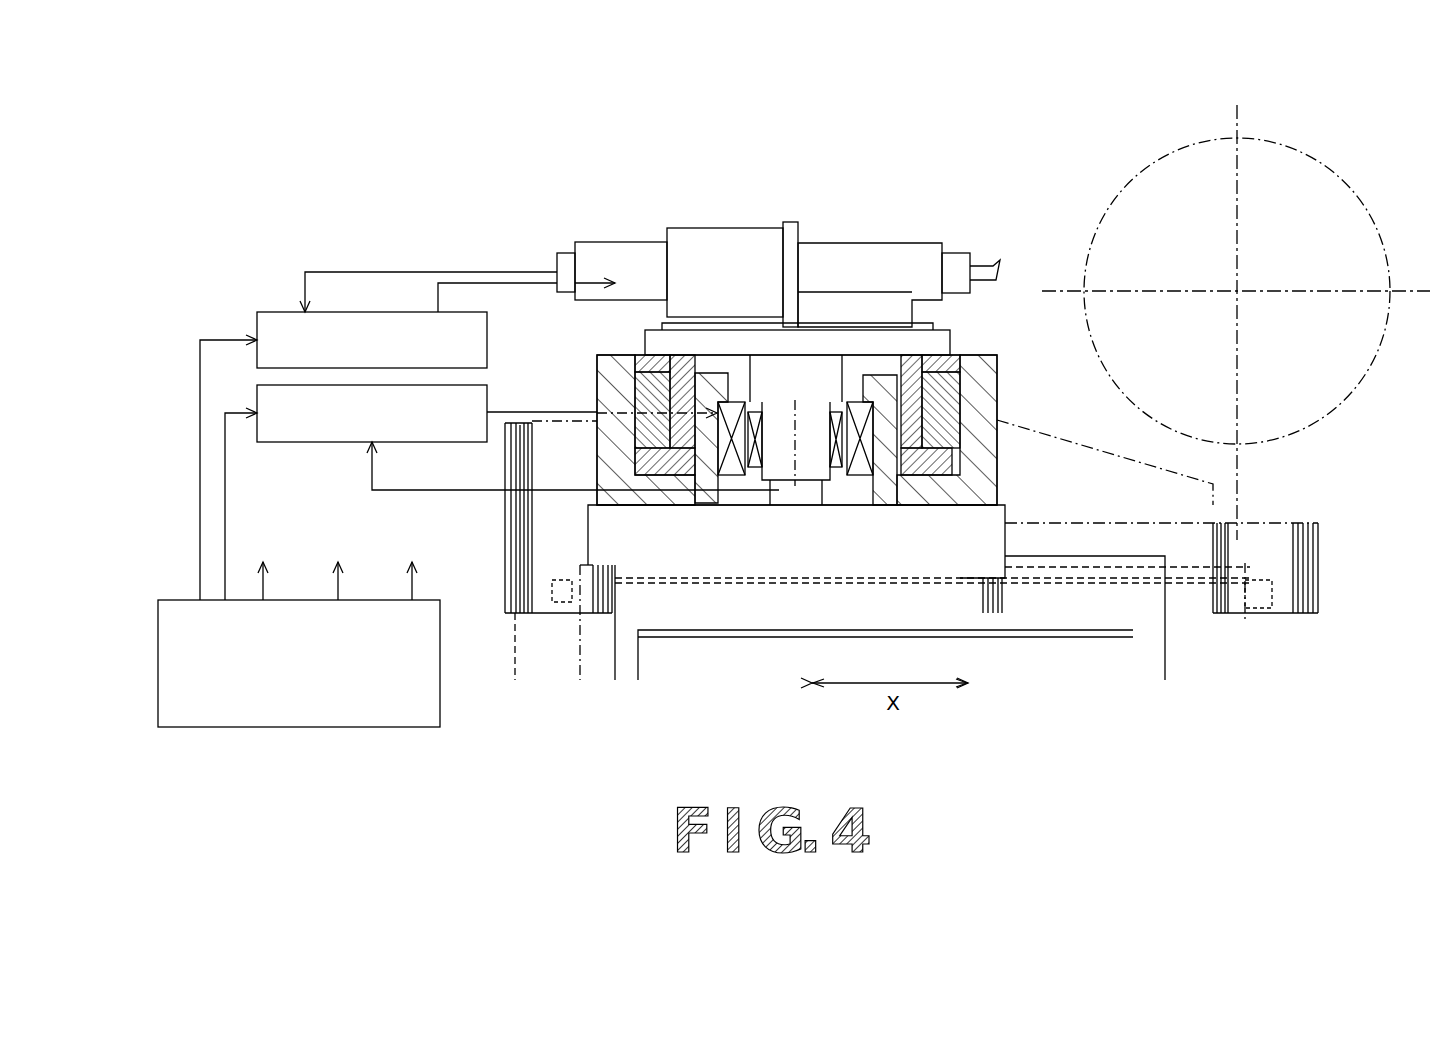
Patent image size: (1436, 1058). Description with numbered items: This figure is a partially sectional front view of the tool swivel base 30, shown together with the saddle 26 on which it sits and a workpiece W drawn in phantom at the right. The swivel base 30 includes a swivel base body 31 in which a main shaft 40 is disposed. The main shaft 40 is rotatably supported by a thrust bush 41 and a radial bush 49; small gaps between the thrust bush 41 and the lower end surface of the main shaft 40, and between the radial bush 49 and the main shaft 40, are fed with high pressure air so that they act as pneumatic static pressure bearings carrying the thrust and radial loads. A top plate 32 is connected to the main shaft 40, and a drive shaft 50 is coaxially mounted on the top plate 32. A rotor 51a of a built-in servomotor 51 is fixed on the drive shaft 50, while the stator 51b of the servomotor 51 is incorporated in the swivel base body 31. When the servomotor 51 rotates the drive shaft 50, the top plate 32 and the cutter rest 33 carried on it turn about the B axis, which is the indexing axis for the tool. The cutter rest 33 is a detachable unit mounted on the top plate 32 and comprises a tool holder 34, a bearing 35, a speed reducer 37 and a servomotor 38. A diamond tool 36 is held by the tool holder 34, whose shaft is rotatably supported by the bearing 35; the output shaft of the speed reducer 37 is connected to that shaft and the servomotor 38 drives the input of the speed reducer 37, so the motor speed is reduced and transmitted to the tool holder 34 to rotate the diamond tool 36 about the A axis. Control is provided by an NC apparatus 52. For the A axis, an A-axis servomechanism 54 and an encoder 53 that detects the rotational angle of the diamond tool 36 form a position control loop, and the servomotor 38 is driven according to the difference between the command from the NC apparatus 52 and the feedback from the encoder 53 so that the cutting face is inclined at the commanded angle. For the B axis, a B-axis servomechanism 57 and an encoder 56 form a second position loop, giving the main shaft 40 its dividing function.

The saddle 26 is at (1128, 668).
The swivel base 30 is at (1006, 403).
The swivel base body 31 is at (1002, 370).
The top plate 32 is at (656, 345).
The cutter rest 33 is at (782, 213).
The tool holder 34 is at (955, 262).
The bearing 35 is at (850, 252).
The diamond tool 36 is at (986, 266).
The speed reducer 37 is at (722, 246).
The servomotor 38 is at (614, 246).
The main shaft 40 is at (690, 480).
The thrust bush 41 is at (652, 456).
The radial bush 49 is at (645, 390).
The drive shaft 50 is at (809, 483).
The servomotor 51 is at (757, 445).
The rotor 51a is at (836, 414).
The stator 51b is at (858, 398).
The NC apparatus 52 is at (333, 727).
The encoder 53 is at (566, 258).
The A-axis servomechanism 54 is at (278, 310).
The encoder 56 is at (781, 494).
The B-axis servomechanism 57 is at (297, 443).
The workpiece W is at (1287, 148).